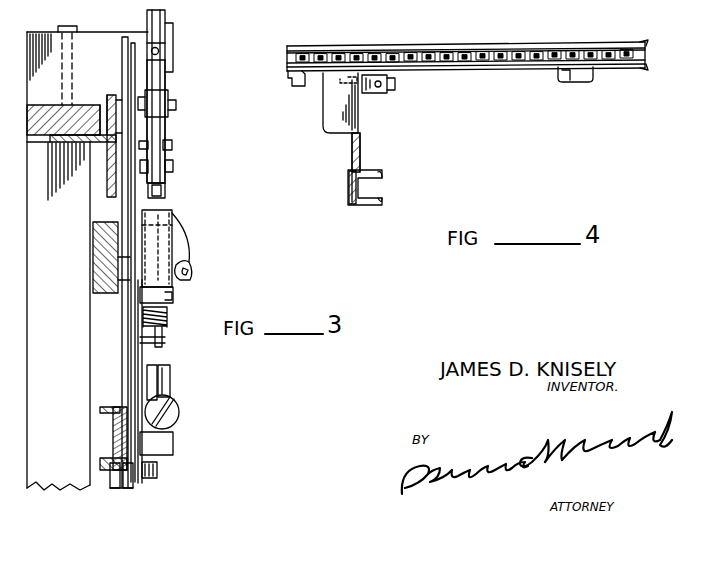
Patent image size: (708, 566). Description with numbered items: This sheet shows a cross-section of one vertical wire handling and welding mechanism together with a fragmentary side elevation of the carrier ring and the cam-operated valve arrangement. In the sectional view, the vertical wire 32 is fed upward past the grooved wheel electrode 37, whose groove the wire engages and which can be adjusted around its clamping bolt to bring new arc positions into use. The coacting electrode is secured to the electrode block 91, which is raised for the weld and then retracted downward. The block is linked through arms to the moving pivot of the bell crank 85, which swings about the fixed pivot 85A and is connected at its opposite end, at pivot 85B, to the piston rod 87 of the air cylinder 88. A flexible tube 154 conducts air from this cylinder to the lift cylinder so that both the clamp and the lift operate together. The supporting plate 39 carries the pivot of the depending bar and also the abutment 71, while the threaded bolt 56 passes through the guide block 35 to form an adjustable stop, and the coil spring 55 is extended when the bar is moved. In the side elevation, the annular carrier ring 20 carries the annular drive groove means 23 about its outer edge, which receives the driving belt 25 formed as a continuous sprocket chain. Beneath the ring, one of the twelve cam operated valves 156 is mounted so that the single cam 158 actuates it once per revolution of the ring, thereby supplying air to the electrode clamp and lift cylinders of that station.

In FIG. 3, the grooved wheel electrode 37 is at (162, 13).
In FIG. 3, the electrode block 91 is at (157, 79).
In FIG. 3, the bell crank 85 is at (158, 130).
In FIG. 3, the fixed pivot 85A is at (166, 143).
In FIG. 3, the bell crank pivot 85B is at (173, 166).
In FIG. 3, the piston rod 87 is at (162, 197).
In FIG. 3, the flexible tube 154 is at (178, 232).
In FIG. 3, the air cylinder 88 is at (162, 252).
In FIG. 3, the plate 39 is at (134, 348).
In FIG. 3, the vertical wire 32 is at (150, 382).
In FIG. 3, the guide block 35 is at (165, 388).
In FIG. 3, the threaded bolt 56 is at (168, 410).
In FIG. 3, the abutment 71 is at (163, 446).
In FIG. 3, the coil spring 55 is at (157, 478).
In FIG. 4, the annular carrier ring 20 is at (400, 48).
In FIG. 4, the annular drive groove means 23 is at (290, 63).
In FIG. 4, the driving belt 25 is at (472, 60).
In FIG. 4, the cam operated valve 156 is at (378, 94).
In FIG. 4, the cam 158 is at (580, 82).